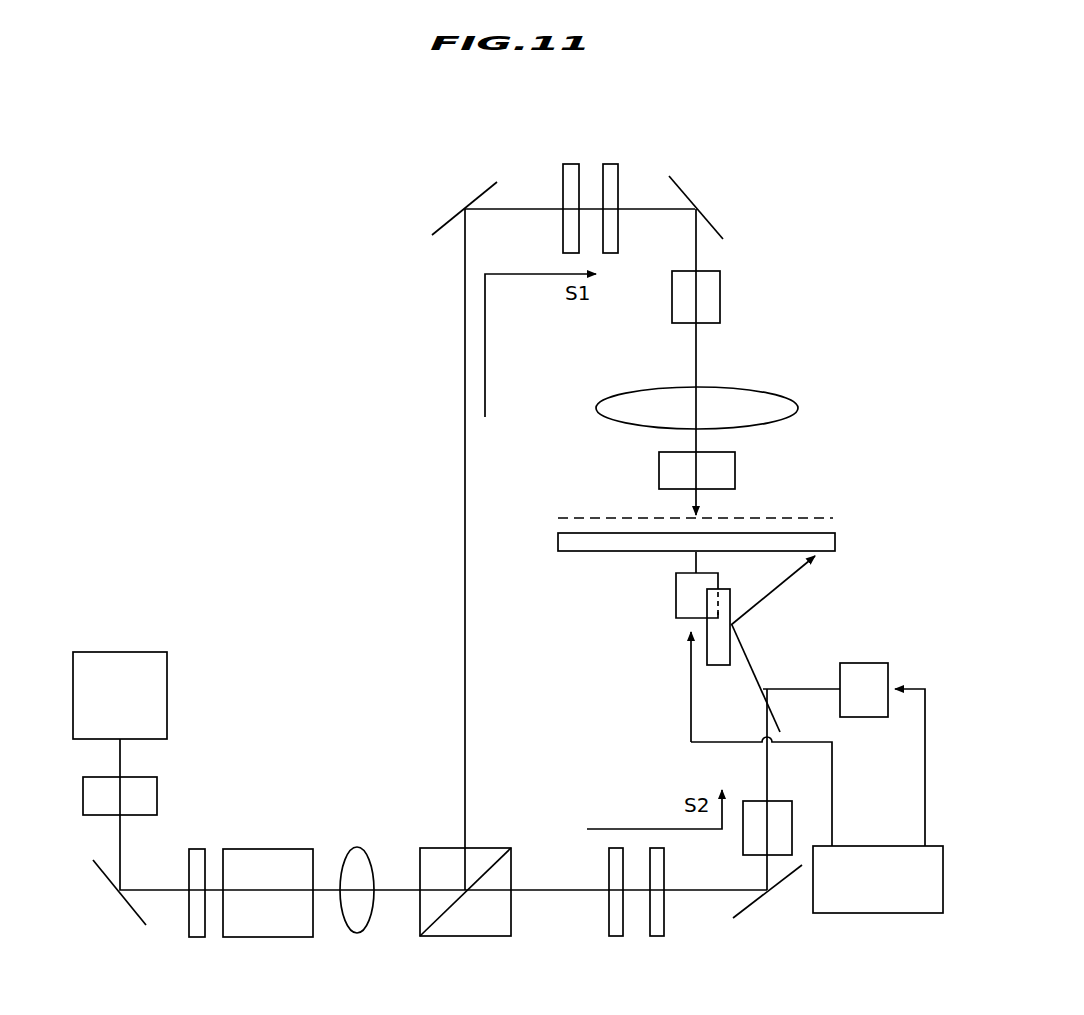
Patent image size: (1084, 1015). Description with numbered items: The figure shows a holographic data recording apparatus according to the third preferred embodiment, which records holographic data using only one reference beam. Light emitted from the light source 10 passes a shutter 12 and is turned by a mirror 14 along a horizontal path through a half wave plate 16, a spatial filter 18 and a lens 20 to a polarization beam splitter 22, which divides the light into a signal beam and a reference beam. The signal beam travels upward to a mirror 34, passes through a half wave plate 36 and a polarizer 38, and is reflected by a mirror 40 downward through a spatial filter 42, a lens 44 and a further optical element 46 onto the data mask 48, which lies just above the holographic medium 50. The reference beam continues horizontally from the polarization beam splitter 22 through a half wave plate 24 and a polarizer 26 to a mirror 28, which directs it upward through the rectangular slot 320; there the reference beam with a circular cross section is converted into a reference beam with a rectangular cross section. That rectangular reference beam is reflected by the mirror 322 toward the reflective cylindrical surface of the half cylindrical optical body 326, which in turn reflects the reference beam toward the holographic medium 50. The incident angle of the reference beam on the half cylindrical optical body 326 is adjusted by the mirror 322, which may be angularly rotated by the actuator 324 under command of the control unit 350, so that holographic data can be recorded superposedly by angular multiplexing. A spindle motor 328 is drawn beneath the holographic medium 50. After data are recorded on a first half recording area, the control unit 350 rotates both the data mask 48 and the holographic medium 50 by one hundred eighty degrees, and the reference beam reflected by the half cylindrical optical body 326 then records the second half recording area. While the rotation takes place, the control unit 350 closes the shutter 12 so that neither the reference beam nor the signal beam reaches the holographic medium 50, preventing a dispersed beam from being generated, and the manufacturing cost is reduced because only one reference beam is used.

The light source 10 is at (167, 695).
The shutter 12 is at (157, 797).
The mirror 14 is at (138, 920).
The half wave plate 16 is at (197, 937).
The spatial filter 18 is at (268, 937).
The lens 20 is at (357, 935).
The polarization beam splitter 22 is at (465, 937).
The half wave plate 24 is at (615, 937).
The polarizer 26 is at (656, 937).
The mirror 28 is at (750, 905).
The mirror 34 is at (447, 220).
The half wave plate 36 is at (573, 163).
The polarizer 38 is at (612, 163).
The mirror 40 is at (710, 227).
The spatial filter 42 is at (720, 297).
The lens 44 is at (752, 393).
The optical element 46 is at (658, 472).
The data mask 48 is at (810, 517).
The holographic medium 50 is at (837, 540).
The rectangular slot 320 is at (785, 800).
The mirror 322 is at (762, 660).
The actuator 324 is at (865, 663).
The half cylindrical optical body 326 is at (707, 652).
The spindle motor 328 is at (676, 598).
The control unit 350 is at (902, 915).